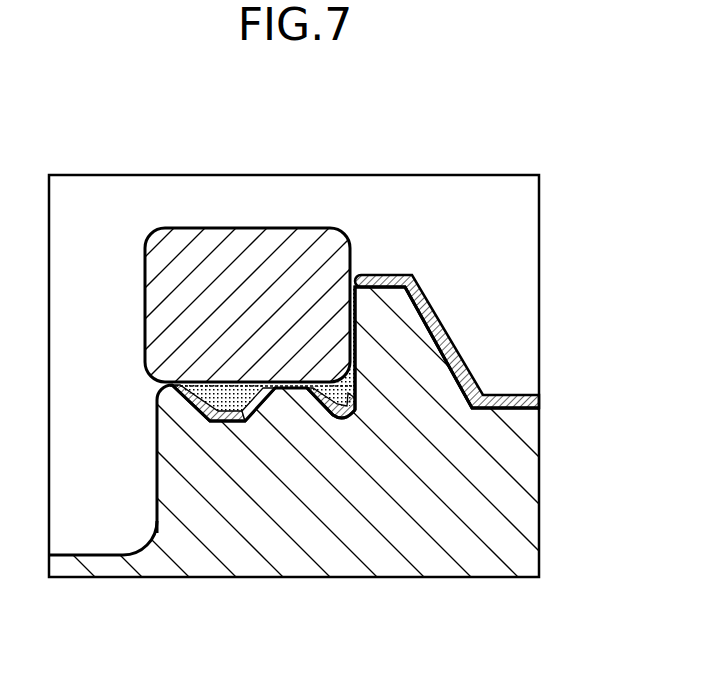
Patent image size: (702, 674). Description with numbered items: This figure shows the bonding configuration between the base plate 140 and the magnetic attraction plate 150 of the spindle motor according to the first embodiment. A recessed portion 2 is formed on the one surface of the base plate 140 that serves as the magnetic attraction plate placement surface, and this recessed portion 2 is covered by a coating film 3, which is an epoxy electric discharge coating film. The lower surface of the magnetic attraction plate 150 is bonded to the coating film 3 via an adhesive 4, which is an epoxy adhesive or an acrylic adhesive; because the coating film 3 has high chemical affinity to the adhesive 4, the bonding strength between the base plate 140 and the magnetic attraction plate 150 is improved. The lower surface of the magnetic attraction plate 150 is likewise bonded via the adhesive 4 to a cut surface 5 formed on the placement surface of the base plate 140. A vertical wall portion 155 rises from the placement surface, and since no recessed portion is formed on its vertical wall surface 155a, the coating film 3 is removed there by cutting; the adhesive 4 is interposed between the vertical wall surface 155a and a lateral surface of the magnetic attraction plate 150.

The recessed portion 2 is at (223, 440).
The coating film 3 is at (266, 398).
The adhesive 4 is at (250, 412).
The cut surface 5 is at (290, 410).
The base plate 140 is at (112, 566).
The magnetic attraction plate 150 is at (229, 257).
The vertical wall portion 155 is at (395, 329).
The vertical wall surface 155a is at (358, 338).